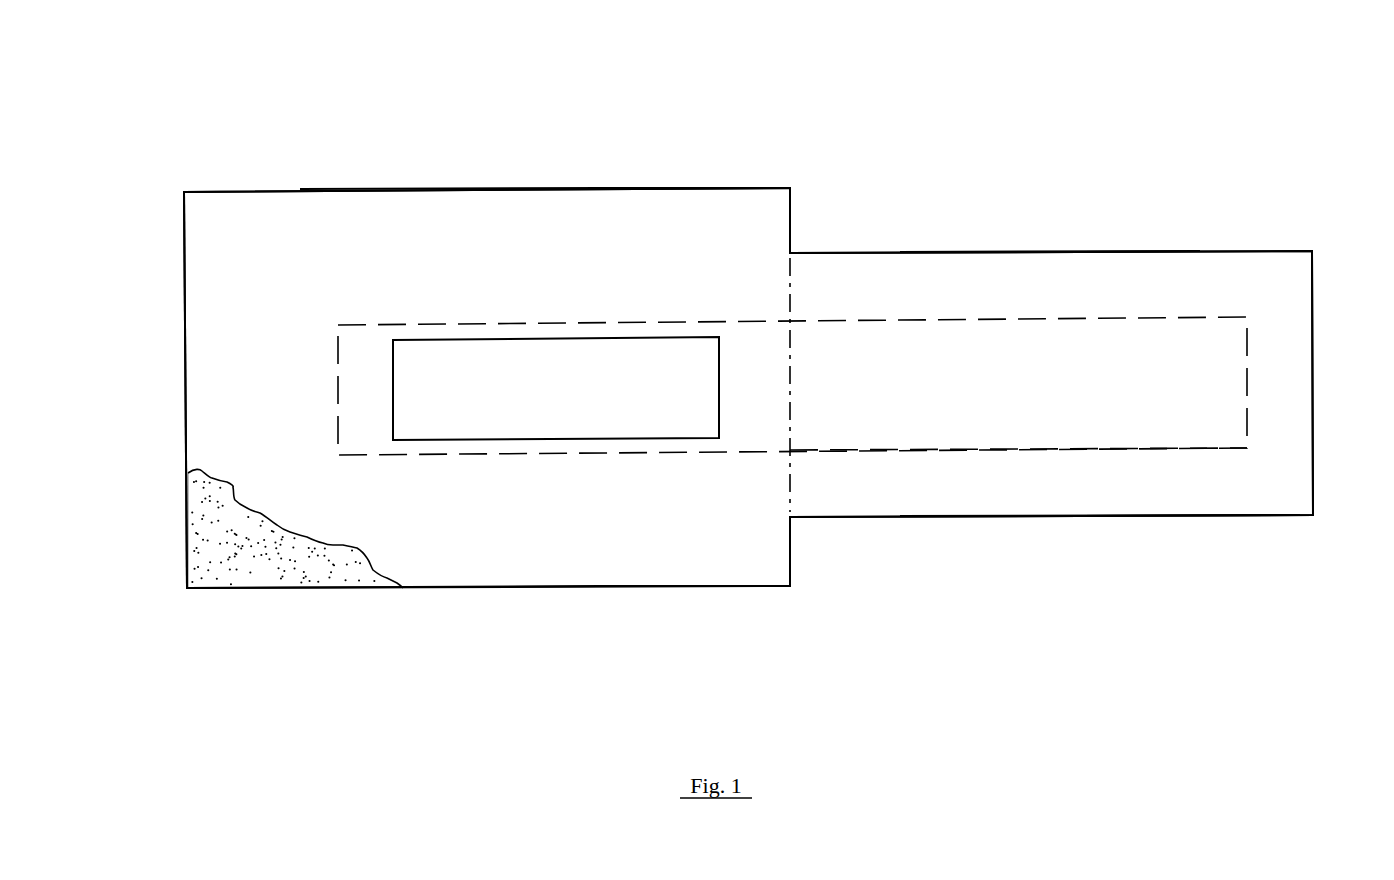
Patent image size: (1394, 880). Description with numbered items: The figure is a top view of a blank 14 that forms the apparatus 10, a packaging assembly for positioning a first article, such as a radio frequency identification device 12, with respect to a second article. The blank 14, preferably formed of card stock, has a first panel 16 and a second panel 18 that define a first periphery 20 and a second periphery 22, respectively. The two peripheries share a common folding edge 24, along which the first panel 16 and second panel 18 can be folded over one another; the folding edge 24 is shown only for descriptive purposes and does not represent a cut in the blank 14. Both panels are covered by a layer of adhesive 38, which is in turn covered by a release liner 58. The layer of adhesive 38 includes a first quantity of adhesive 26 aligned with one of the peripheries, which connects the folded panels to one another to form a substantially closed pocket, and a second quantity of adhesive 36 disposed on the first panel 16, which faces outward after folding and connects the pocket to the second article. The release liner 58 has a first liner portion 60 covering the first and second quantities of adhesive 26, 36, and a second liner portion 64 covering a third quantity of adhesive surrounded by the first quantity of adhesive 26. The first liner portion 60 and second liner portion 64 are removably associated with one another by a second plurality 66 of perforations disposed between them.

The apparatus 10 is at (993, 115).
The radio frequency identification device 12 is at (532, 370).
The blank 14 is at (282, 600).
The first panel 16 is at (273, 218).
The second panel 18 is at (1055, 280).
The first periphery 20 is at (413, 190).
The second periphery 22 is at (1133, 517).
The folding edge 24 is at (788, 280).
The first quantity of adhesive 26 is at (208, 522).
The second quantity of adhesive 36 is at (317, 567).
The layer of adhesive 38 is at (188, 605).
The release liner 58 is at (1247, 232).
The first liner portion 60 is at (640, 222).
The second liner portion 64 is at (1193, 378).
The second plurality of perforations 66 is at (932, 473).